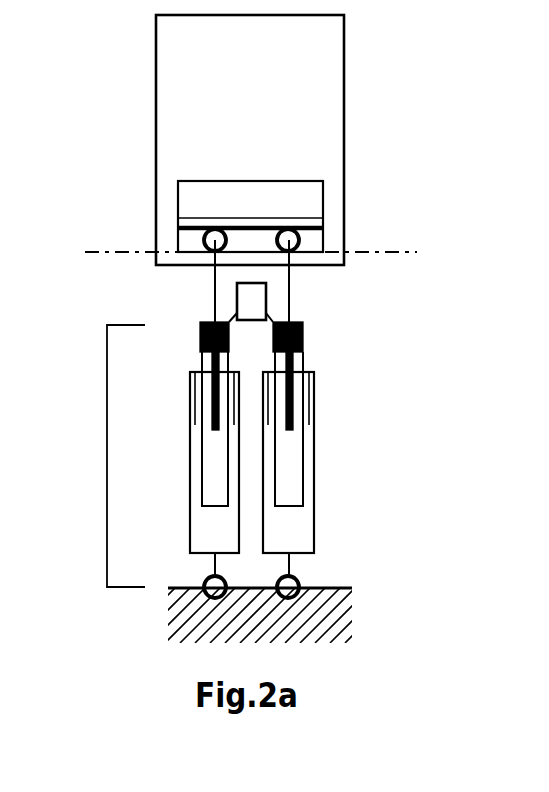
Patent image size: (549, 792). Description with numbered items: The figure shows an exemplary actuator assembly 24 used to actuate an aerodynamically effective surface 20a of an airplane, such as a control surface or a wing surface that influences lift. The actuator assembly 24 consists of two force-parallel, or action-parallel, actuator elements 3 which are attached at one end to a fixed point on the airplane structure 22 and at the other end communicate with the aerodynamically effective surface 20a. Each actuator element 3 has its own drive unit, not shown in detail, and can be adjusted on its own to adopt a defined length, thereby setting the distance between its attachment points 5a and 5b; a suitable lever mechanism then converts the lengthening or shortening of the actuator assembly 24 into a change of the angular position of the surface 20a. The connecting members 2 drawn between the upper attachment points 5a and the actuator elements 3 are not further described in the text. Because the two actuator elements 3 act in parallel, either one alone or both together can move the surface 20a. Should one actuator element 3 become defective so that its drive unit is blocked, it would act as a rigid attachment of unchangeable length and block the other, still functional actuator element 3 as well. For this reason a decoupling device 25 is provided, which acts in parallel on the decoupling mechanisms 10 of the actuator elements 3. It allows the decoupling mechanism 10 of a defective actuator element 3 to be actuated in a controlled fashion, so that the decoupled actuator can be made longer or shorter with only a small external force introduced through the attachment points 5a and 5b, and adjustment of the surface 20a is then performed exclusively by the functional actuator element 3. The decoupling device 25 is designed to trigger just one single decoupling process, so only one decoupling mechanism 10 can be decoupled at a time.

The aerodynamically effective surface 20a is at (310, 70).
The attachment point 5a is at (214, 240).
The support rods 2 is at (290, 283).
The decoupling device 25 is at (266, 297).
The decoupling mechanism 10 is at (303, 335).
The actuator element 3 is at (297, 522).
The attachment point 5b is at (281, 574).
The airplane structure 22 is at (332, 620).
The actuator assembly 24 is at (107, 440).